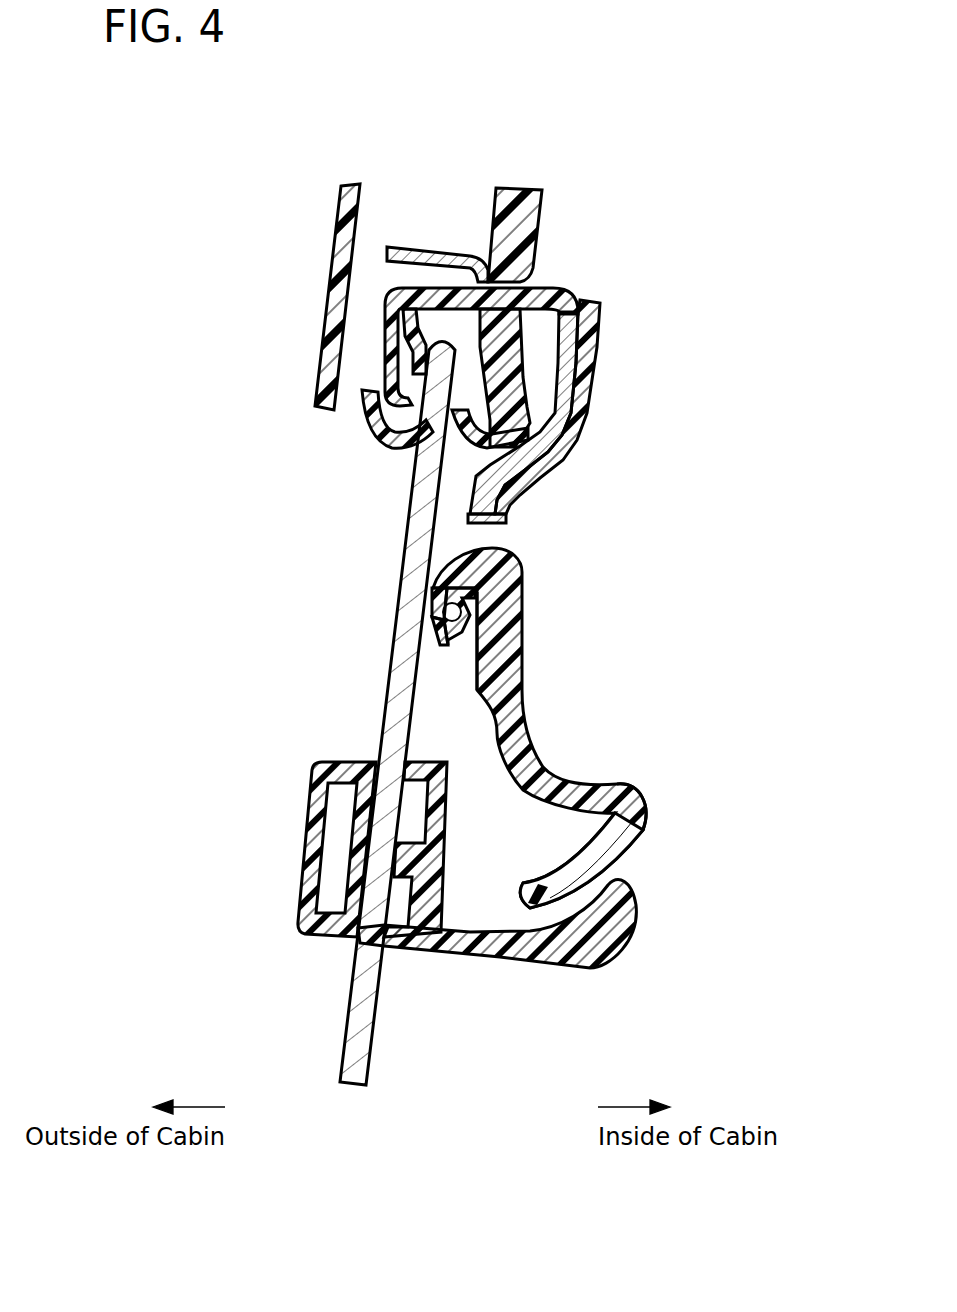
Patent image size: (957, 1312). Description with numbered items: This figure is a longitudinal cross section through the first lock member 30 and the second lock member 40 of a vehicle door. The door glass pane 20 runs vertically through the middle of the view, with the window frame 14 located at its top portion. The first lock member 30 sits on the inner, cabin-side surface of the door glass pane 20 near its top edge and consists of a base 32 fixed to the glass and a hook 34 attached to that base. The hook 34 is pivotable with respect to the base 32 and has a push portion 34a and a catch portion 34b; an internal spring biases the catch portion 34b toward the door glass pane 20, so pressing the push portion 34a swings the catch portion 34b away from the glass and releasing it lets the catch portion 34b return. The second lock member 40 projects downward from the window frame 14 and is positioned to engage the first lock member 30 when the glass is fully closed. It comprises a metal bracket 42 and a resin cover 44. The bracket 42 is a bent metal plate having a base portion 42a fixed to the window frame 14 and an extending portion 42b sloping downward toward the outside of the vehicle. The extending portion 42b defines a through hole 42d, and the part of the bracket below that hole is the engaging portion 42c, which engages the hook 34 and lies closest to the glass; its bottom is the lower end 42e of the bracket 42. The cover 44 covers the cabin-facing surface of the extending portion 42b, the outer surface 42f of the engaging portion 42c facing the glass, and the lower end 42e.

The window frame 14 is at (418, 262).
The door glass pane 20 is at (405, 688).
The first lock member 30 is at (551, 749).
The base 32 is at (615, 925).
The hook 34 is at (593, 719).
The push portion 34a is at (630, 813).
The catch portion 34b is at (500, 550).
The second lock member 40 is at (502, 470).
The bracket 42 is at (502, 470).
The base portion 42a is at (540, 283).
The extending portion 42b is at (547, 467).
The engaging portion 42c is at (473, 630).
The through hole 42d is at (457, 533).
The lower end 42e is at (445, 653).
The outer surface 42f is at (453, 625).
The cover 44 is at (598, 337).